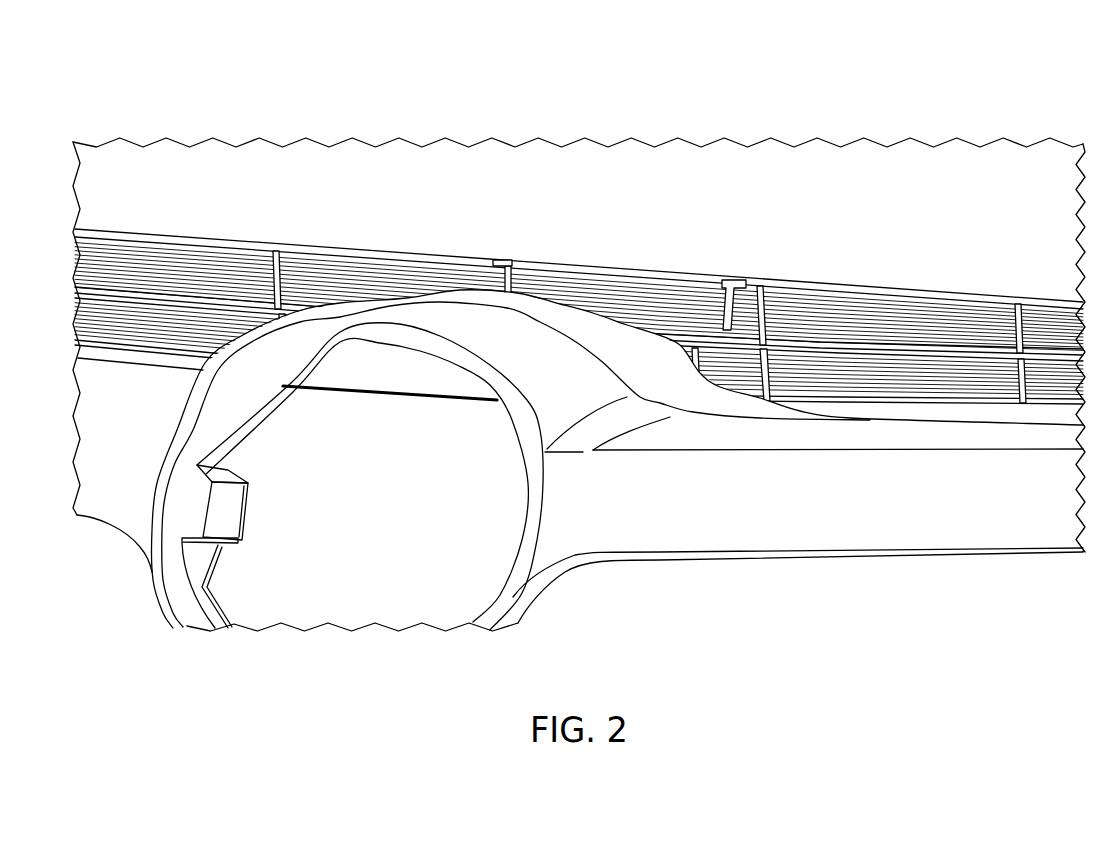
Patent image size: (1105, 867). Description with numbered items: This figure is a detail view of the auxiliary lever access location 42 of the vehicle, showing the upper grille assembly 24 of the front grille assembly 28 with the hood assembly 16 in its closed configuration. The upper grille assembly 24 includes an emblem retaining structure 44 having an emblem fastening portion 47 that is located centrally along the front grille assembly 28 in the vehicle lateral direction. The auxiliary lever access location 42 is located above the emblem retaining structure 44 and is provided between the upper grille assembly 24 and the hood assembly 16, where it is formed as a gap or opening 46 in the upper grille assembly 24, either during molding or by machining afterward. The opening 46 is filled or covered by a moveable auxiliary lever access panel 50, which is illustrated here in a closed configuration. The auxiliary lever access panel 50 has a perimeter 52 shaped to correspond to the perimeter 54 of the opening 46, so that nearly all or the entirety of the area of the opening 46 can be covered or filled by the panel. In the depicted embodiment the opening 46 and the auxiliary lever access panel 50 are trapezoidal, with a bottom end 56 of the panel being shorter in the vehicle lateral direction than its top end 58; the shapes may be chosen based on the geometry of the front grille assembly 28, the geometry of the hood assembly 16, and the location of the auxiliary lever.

The hood assembly 16 is at (579, 326).
The front grille assembly 28 is at (509, 239).
The upper grille assembly 24 is at (798, 401).
The auxiliary lever access location 42 is at (579, 293).
The auxiliary lever access panel 50 is at (579, 268).
The top end 58 is at (602, 266).
The perimeter 52 is at (537, 262).
The opening 46 is at (761, 286).
The perimeter 54 is at (725, 320).
The bottom end 56 is at (650, 333).
The emblem retaining structure 44 is at (362, 424).
The emblem fastening portion 47 is at (367, 420).